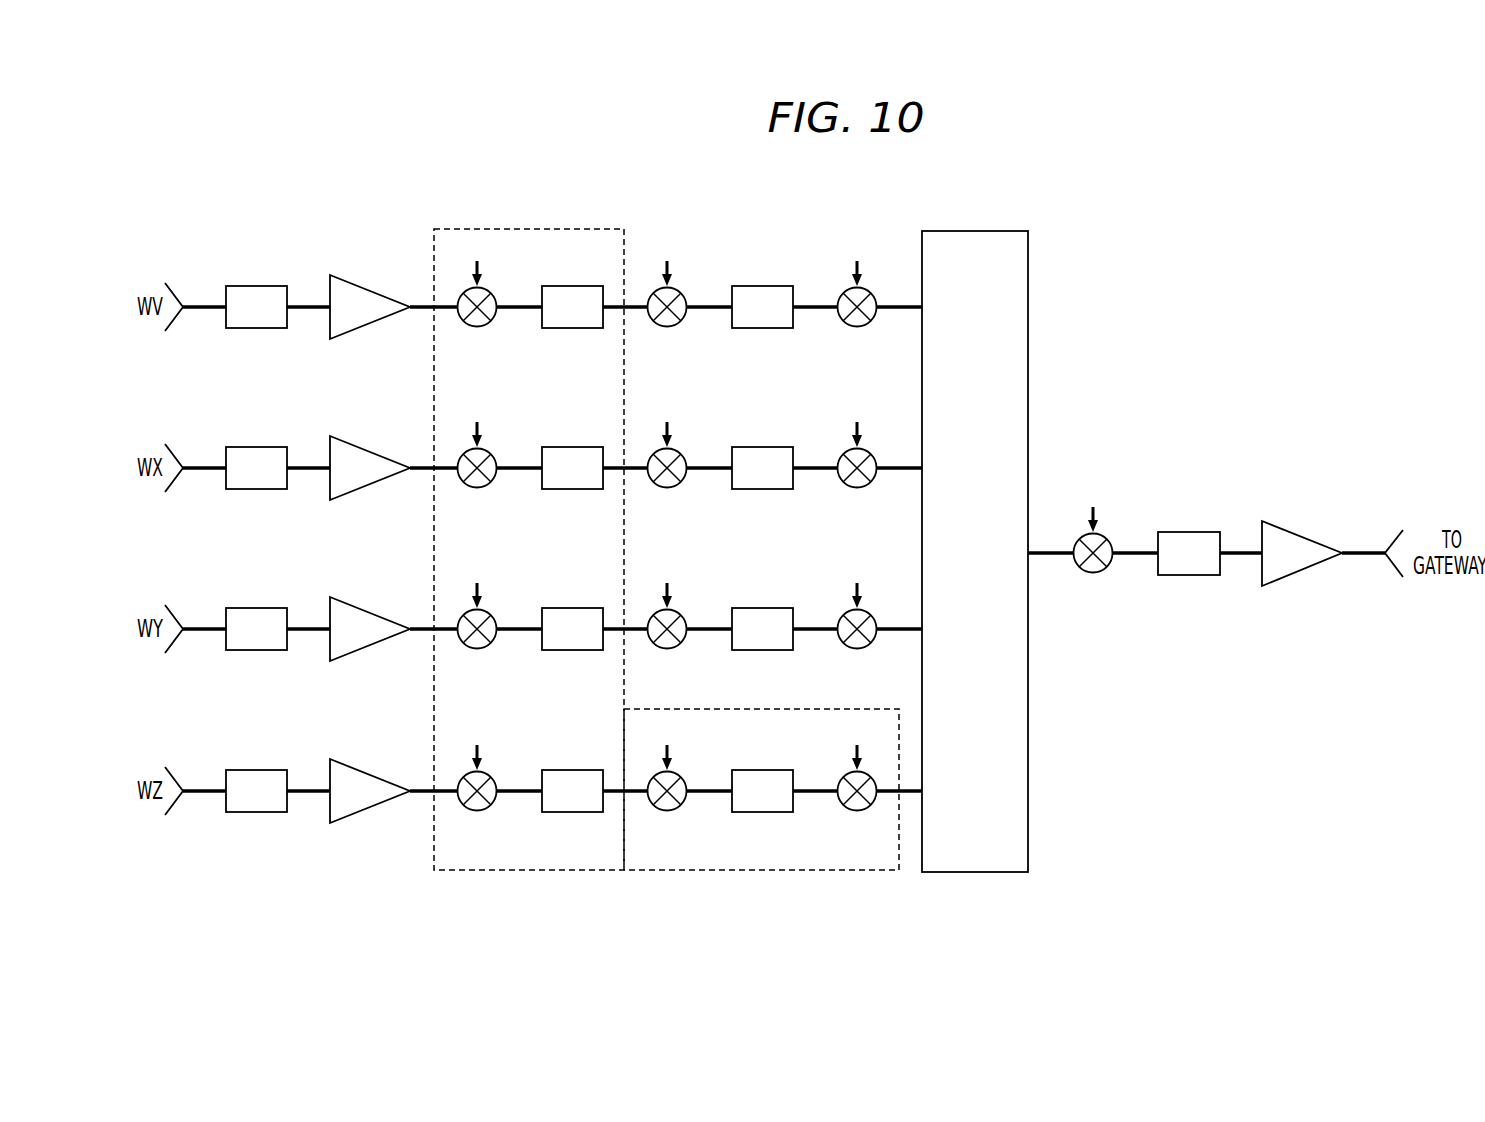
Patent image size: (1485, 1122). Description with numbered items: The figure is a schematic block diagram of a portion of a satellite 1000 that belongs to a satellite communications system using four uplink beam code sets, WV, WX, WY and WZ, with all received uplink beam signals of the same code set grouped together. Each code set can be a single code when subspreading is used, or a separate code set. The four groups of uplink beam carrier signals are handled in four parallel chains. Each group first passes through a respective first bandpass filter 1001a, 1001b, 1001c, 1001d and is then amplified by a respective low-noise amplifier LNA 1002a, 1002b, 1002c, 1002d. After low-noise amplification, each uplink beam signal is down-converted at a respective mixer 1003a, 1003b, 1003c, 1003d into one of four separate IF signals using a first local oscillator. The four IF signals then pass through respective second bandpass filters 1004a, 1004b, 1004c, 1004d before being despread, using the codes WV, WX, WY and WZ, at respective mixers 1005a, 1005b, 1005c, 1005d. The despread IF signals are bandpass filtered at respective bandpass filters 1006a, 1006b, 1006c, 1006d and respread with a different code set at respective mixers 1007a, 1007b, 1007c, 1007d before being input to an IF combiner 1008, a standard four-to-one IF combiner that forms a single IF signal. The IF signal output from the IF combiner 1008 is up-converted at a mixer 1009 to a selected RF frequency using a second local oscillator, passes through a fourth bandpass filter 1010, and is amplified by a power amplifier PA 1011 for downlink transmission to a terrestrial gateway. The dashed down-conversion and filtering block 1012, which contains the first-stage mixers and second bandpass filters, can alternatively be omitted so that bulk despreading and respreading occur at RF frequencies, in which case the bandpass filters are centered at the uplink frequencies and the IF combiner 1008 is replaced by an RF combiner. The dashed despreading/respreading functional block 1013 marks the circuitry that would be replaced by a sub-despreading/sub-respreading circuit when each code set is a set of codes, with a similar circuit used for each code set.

The satellite 1000 is at (698, 194).
The first bandpass filter 1001a is at (258, 283).
The first bandpass filter 1001b is at (258, 444).
The first bandpass filter 1001c is at (258, 605).
The first bandpass filter 1001d is at (258, 767).
The low-noise amplifier LNA 1002a is at (360, 280).
The low-noise amplifier LNA 1002b is at (360, 441).
The low-noise amplifier LNA 1002c is at (360, 602).
The low-noise amplifier LNA 1002d is at (360, 764).
The mixer 1003a is at (477, 327).
The mixer 1003b is at (477, 488).
The mixer 1003c is at (477, 649).
The mixer 1003d is at (477, 811).
The second bandpass filter 1004a is at (574, 283).
The second bandpass filter 1004b is at (574, 444).
The second bandpass filter 1004c is at (574, 605).
The second bandpass filter 1004d is at (574, 767).
The mixer 1005a is at (667, 327).
The mixer 1005b is at (667, 488).
The mixer 1005c is at (667, 649).
The mixer 1005d is at (667, 811).
The bandpass filter 1006a is at (764, 283).
The bandpass filter 1006b is at (764, 444).
The bandpass filter 1006c is at (764, 605).
The bandpass filter 1006d is at (764, 767).
The mixer 1007a is at (857, 327).
The mixer 1007b is at (857, 488).
The mixer 1007c is at (857, 649).
The mixer 1007d is at (857, 811).
The IF combiner 1008 is at (978, 229).
The mixer 1009 is at (1093, 573).
The fourth bandpass filter 1010 is at (1189, 529).
The power amplifier PA 1011 is at (1292, 527).
The down-conversion and filtering block 1012 is at (524, 873).
The despreading/respreading functional block 1013 is at (757, 873).